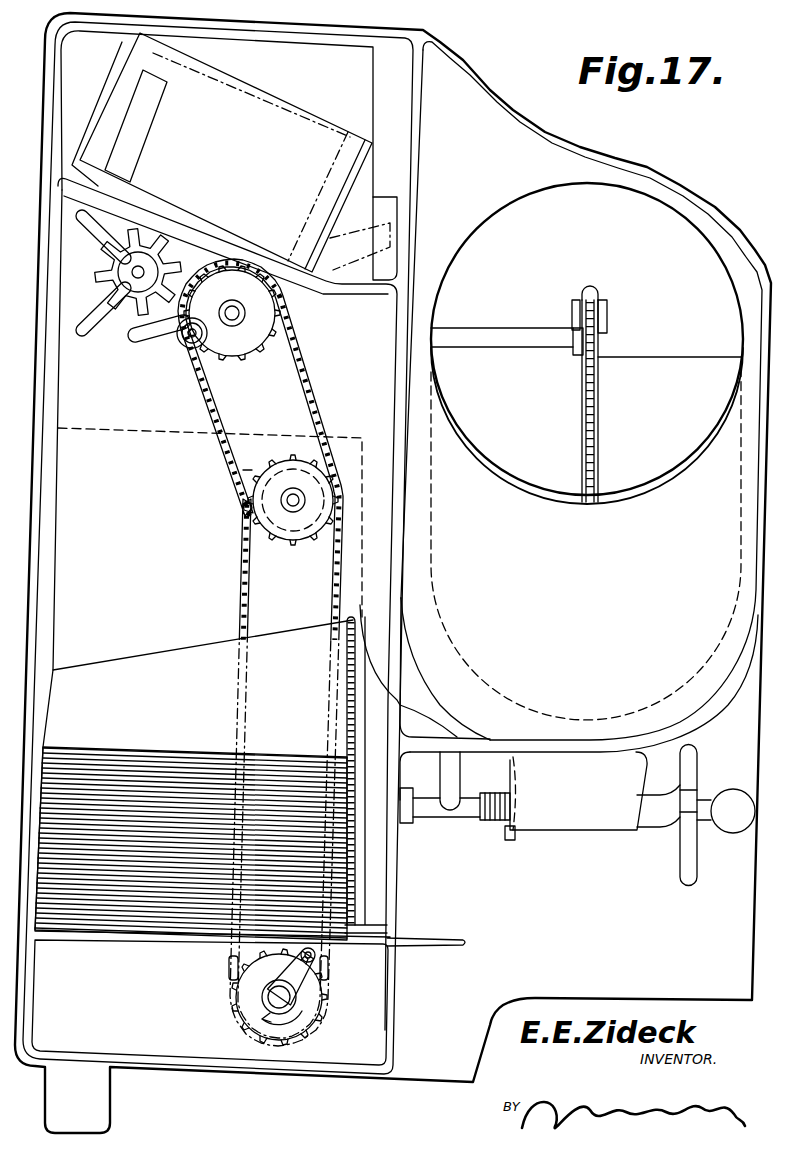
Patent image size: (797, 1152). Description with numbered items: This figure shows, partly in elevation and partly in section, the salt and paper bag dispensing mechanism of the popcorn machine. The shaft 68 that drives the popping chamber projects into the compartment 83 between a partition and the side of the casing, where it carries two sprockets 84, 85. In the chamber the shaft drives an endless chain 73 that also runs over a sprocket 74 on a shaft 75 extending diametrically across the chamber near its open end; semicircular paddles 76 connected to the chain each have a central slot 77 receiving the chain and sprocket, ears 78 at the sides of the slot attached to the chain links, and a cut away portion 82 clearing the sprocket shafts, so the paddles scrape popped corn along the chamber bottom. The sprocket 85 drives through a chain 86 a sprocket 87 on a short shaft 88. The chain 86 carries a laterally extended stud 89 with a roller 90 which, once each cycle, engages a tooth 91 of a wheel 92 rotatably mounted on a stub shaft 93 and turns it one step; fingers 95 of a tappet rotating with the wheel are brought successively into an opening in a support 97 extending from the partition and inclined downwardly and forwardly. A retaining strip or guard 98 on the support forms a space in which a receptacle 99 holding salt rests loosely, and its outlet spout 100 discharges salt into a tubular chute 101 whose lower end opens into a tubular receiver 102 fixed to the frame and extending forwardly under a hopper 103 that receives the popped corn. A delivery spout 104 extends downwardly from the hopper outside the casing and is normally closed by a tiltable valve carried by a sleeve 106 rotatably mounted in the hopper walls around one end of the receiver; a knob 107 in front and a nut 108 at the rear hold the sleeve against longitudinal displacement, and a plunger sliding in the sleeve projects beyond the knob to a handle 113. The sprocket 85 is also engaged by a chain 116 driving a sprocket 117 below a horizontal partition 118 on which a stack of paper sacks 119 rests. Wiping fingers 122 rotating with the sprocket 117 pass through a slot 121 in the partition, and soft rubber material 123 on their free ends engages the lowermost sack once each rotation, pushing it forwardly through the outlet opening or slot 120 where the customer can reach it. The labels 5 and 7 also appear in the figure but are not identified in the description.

The drum 5 is at (587, 451).
The housing 7 is at (674, 171).
The shaft 68 is at (280, 503).
The endless chain 73 is at (594, 453).
The sprocket 74 is at (592, 340).
The shaft 75 is at (530, 348).
The paddle 76 is at (670, 330).
The slot 77 is at (593, 290).
The ears 78 is at (580, 298).
The cut away portion 82 is at (508, 327).
The compartment 83 is at (210, 522).
The sprocket 84 is at (250, 483).
The sprocket 85 is at (277, 547).
The chain 86 is at (307, 382).
The sprocket 87 is at (248, 342).
The short shaft 88 is at (247, 312).
The stud 89 is at (190, 350).
The roller 90 is at (182, 335).
The tooth 91 is at (143, 332).
The wheel 92 is at (128, 305).
The stub shaft 93 is at (121, 276).
The fingers 95 is at (100, 228).
The support 97 is at (153, 207).
The retaining strip or guard 98 is at (143, 122).
The receptacle 99 is at (222, 152).
The outlet spout 100 is at (353, 240).
The chute 101 is at (377, 372).
The tubular receiver 102 is at (470, 814).
The hopper 103 is at (487, 722).
The delivery spout 104 is at (523, 791).
The sleeve 106 is at (513, 793).
The knob 107 is at (697, 749).
The nut 108 is at (504, 831).
The knob or handle 113 is at (727, 790).
The chain 116 is at (240, 592).
The sprocket 117 is at (240, 1003).
The horizontal partition 118 is at (113, 938).
The stack of paper sacks 119 is at (163, 753).
The outlet opening or slot 120 is at (360, 930).
The slot 121 is at (233, 945).
The wiping fingers 122 is at (320, 990).
The soft material 123 is at (320, 955).